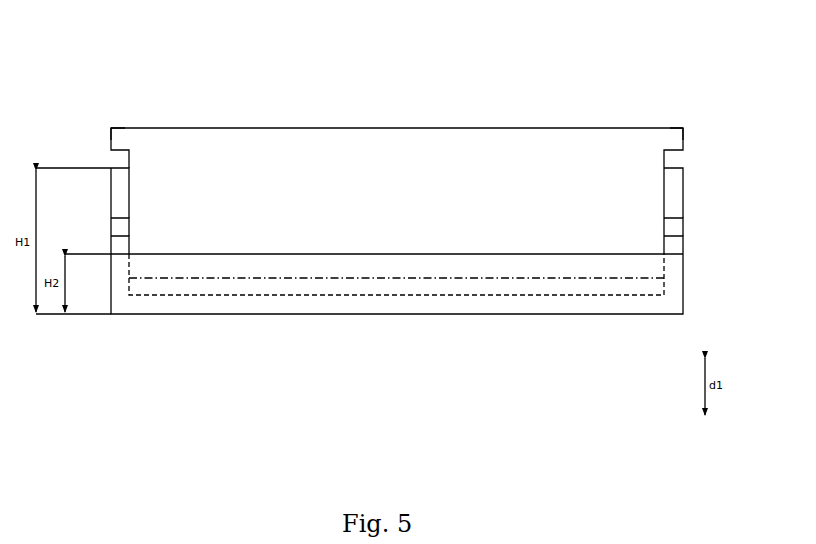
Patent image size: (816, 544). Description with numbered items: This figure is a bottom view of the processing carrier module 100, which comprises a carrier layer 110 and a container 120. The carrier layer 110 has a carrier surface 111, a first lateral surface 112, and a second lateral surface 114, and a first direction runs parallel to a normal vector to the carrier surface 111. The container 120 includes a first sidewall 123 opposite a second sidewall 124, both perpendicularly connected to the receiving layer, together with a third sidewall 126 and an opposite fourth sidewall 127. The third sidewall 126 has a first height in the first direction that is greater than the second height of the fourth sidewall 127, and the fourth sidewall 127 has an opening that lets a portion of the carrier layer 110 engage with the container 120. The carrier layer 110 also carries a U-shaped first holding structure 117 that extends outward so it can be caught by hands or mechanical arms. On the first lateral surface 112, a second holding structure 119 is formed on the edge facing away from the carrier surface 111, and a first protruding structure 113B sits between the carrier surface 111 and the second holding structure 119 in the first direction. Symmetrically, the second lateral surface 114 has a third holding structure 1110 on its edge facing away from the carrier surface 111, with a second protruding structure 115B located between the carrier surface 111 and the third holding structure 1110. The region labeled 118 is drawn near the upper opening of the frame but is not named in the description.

The processing carrier module 100 is at (118, 23).
The carrier layer 110 is at (395, 76).
The carrier surface 111 is at (195, 283).
The first lateral surface 112 is at (133, 186).
The first protruding structure 113B is at (111, 237).
The second lateral surface 114 is at (660, 184).
The second protruding structure 115B is at (677, 238).
The first holding structure 117 is at (531, 158).
The upper opening 118 is at (201, 145).
The second holding structure 119 is at (118, 128).
The third holding structure 1110 is at (676, 128).
The container 120 is at (388, 321).
The first sidewall 123 is at (111, 219).
The second sidewall 124 is at (677, 219).
The third sidewall 126 is at (111, 191).
The fourth sidewall 127 is at (650, 261).